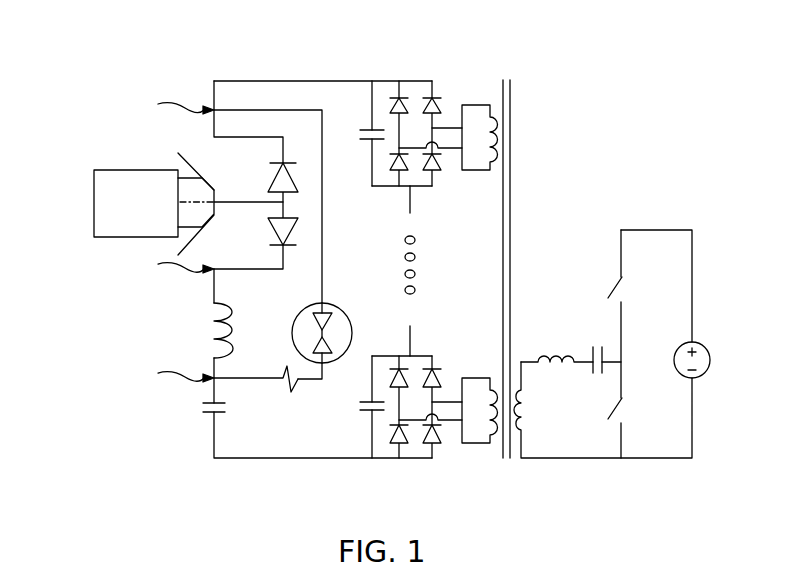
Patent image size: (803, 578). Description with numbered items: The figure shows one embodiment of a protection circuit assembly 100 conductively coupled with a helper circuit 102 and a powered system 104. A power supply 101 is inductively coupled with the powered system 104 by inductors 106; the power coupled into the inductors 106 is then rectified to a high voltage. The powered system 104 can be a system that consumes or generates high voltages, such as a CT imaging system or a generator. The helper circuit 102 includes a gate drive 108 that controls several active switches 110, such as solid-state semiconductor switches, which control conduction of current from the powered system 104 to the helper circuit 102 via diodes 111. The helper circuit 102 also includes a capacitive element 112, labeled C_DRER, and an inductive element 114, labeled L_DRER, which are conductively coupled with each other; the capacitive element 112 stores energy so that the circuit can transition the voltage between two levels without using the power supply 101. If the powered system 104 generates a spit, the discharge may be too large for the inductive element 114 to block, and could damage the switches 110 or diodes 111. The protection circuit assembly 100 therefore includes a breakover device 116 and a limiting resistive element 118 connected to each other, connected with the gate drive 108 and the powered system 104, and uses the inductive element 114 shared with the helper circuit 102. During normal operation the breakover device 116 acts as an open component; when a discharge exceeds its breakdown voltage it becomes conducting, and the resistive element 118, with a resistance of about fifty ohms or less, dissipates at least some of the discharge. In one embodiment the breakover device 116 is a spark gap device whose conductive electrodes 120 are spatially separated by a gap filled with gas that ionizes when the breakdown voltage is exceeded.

The protection circuit assembly 100 is at (332, 477).
The power supply 101 is at (693, 477).
The helper circuit 102 is at (360, 68).
The powered system 104 is at (373, 477).
The inductors 106 is at (472, 92).
The gate drive 108 is at (112, 170).
The active switches 110 is at (206, 164).
The diodes 111 is at (260, 177).
The capacitive element 112 is at (225, 412).
The inductive element 114 is at (236, 330).
The breakover device 116 is at (333, 302).
The limiting resistive element 118 is at (291, 393).
The conductive electrodes 120 is at (332, 340).